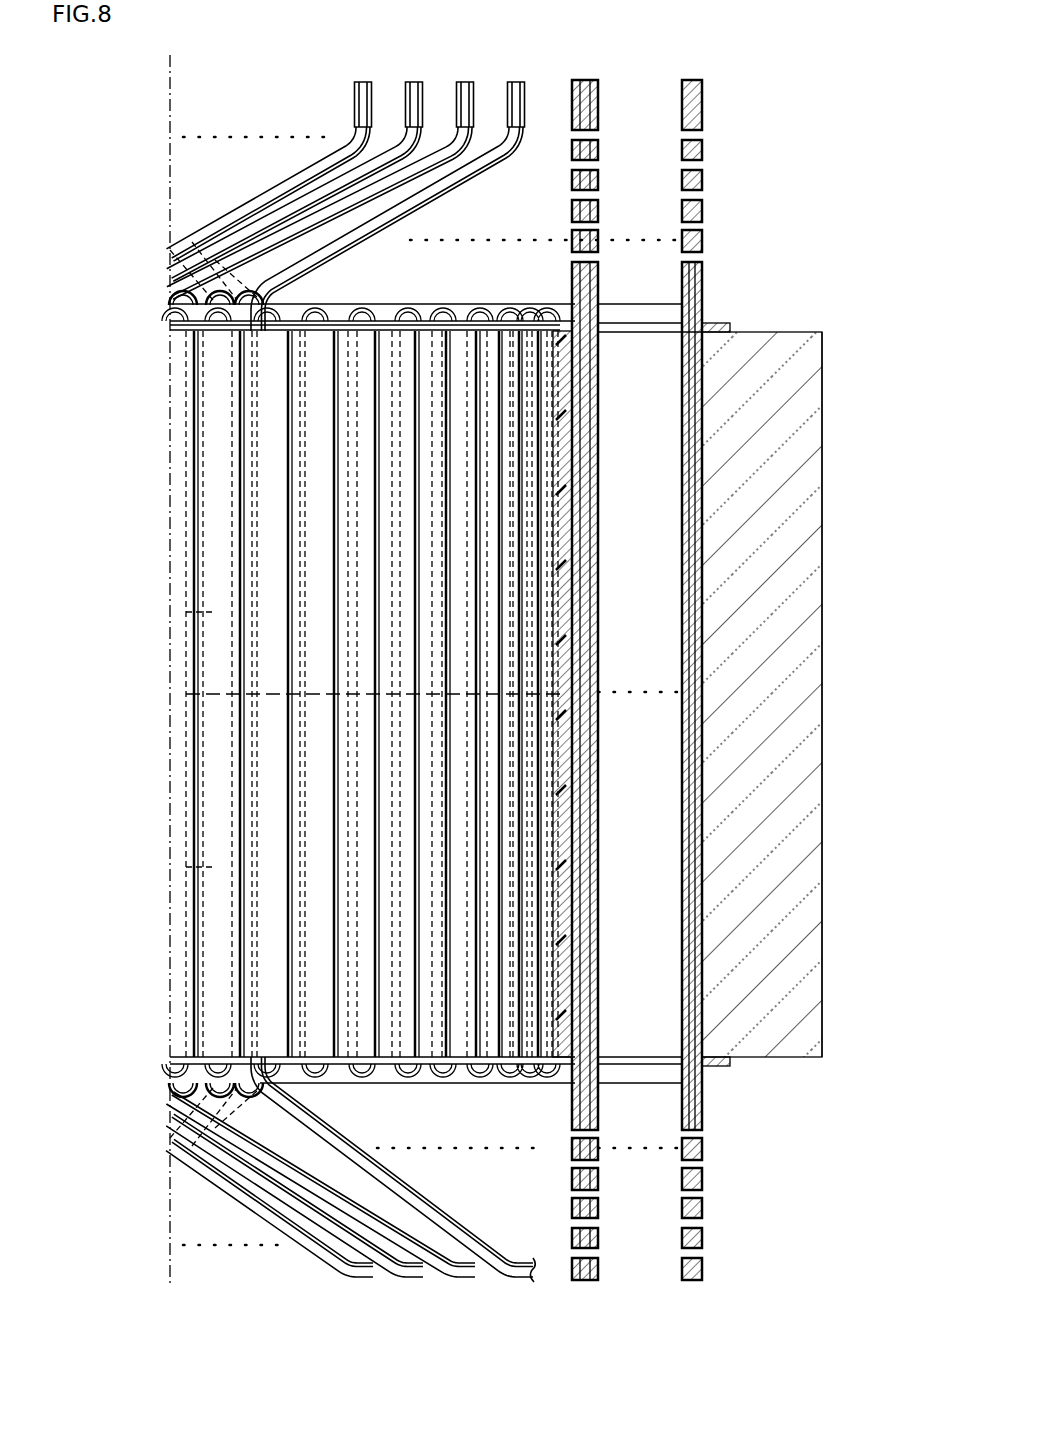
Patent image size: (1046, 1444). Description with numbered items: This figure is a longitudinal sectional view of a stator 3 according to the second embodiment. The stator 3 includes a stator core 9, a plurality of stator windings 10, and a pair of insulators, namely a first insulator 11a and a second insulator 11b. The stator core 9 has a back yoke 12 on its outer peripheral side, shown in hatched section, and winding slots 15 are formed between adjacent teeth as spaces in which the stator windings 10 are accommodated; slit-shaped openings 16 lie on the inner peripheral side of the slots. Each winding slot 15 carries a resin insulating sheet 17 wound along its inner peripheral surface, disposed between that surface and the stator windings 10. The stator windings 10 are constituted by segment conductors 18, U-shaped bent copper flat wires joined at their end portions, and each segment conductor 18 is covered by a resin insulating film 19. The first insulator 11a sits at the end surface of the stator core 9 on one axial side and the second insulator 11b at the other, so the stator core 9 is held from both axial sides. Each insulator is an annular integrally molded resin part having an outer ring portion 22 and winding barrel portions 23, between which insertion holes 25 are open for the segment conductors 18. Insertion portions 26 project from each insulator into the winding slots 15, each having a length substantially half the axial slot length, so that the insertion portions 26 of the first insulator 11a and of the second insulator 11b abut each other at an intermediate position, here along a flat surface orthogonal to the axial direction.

The stator 3 is at (823, 150).
The stator core 9 is at (824, 410).
The stator windings 10 is at (462, 80).
The first insulator 11a is at (462, 303).
The second insulator 11b is at (465, 1088).
The back yoke 12 is at (782, 340).
The winding slots 15 is at (626, 611).
The slit-shaped openings 16 is at (203, 775).
The insulating sheet 17 is at (580, 765).
The segment conductors 18 is at (364, 82).
The insulating film 19 is at (225, 238).
The outer ring portion 22 is at (712, 323).
The winding barrel portions 23 is at (423, 308).
The insertion holes 25 is at (643, 325).
The insertion portions 26 is at (563, 470).